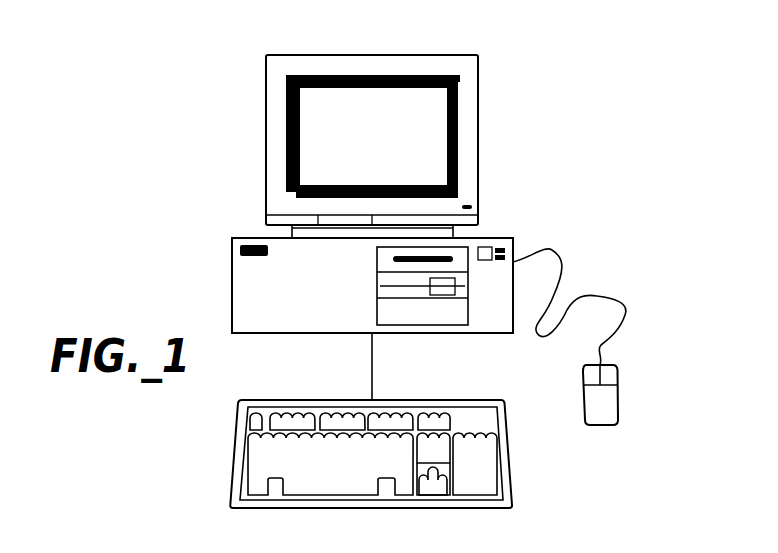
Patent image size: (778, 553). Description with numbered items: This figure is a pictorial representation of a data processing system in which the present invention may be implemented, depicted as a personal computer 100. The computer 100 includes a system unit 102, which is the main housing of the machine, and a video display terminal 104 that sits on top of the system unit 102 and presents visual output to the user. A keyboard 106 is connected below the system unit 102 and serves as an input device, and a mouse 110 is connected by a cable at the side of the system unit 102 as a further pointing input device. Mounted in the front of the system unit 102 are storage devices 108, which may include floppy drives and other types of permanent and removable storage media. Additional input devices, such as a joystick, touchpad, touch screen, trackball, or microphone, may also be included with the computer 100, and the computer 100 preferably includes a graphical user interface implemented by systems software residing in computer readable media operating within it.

The computer 100 is at (539, 189).
The system unit 102 is at (487, 333).
The video display terminal 104 is at (478, 135).
The keyboard 106 is at (514, 479).
The storage devices 108 is at (377, 290).
The mouse 110 is at (618, 390).